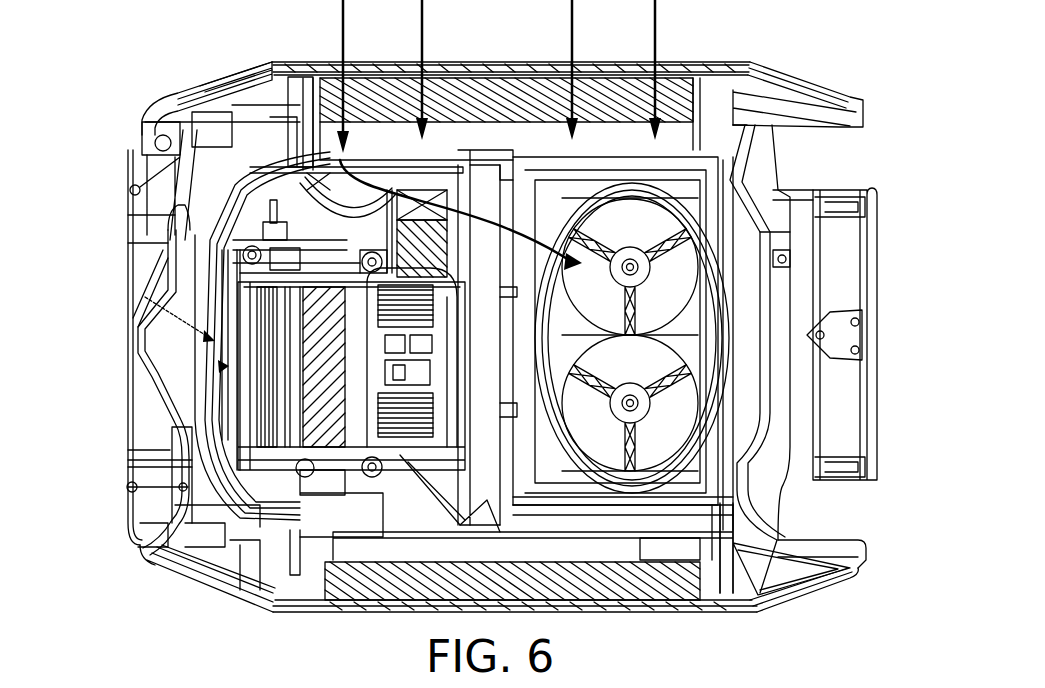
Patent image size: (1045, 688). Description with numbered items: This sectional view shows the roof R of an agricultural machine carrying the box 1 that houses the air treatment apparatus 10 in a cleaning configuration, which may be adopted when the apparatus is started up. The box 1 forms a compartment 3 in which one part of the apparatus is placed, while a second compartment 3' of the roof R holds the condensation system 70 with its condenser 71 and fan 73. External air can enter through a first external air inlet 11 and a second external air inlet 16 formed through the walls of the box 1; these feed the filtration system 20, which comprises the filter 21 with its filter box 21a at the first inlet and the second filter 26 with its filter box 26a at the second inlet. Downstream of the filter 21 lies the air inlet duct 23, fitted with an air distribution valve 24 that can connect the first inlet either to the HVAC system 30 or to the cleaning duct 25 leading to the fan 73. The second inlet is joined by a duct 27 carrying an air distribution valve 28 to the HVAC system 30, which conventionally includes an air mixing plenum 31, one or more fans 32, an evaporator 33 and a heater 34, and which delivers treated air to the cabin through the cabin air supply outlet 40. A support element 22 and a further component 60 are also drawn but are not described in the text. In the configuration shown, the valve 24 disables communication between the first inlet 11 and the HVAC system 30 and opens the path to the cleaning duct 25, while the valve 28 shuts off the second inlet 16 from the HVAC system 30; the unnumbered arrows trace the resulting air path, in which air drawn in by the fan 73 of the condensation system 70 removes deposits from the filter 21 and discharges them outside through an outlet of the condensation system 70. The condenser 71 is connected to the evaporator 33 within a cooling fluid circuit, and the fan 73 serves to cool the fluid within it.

The roof R is at (237, 60).
The box 1 is at (208, 88).
The compartment 3 is at (136, 185).
The second compartment 3' is at (785, 546).
The air treatment apparatus 10 is at (150, 450).
The first external air inlet 11 is at (467, 62).
The second external air inlet 16 is at (665, 610).
The filtration system 20 is at (832, 608).
The filter 21 is at (494, 54).
The filter box 21a is at (607, 110).
The support column 22 is at (286, 190).
The air inlet duct 23 is at (381, 160).
The air distribution valve 24 is at (505, 210).
The cleaning duct 25 is at (476, 300).
The second filter 26 is at (677, 626).
The filter box 26a is at (688, 613).
The duct 27 is at (487, 462).
The air distribution valve 28 is at (410, 480).
The HVAC system 30 is at (165, 375).
The air mixing plenum 31 is at (475, 340).
The fans 32 is at (513, 474).
The evaporator 33 is at (232, 590).
The heater 34 is at (157, 572).
The cabin air supply outlet 40 is at (145, 297).
The heat exchanger module 60 is at (372, 600).
The condensation system 70 is at (680, 160).
The condenser 71 is at (783, 175).
The fan 73 is at (647, 537).